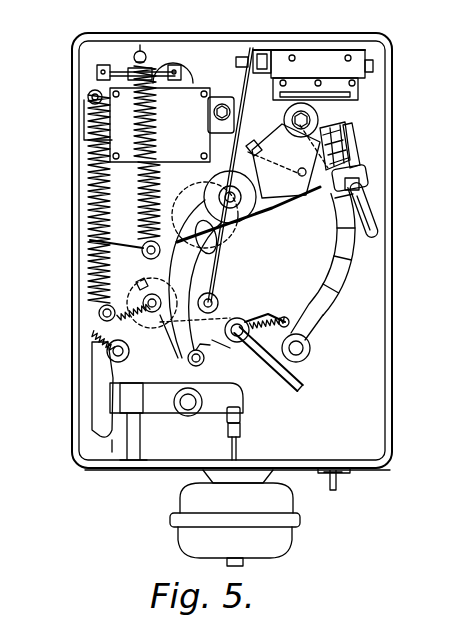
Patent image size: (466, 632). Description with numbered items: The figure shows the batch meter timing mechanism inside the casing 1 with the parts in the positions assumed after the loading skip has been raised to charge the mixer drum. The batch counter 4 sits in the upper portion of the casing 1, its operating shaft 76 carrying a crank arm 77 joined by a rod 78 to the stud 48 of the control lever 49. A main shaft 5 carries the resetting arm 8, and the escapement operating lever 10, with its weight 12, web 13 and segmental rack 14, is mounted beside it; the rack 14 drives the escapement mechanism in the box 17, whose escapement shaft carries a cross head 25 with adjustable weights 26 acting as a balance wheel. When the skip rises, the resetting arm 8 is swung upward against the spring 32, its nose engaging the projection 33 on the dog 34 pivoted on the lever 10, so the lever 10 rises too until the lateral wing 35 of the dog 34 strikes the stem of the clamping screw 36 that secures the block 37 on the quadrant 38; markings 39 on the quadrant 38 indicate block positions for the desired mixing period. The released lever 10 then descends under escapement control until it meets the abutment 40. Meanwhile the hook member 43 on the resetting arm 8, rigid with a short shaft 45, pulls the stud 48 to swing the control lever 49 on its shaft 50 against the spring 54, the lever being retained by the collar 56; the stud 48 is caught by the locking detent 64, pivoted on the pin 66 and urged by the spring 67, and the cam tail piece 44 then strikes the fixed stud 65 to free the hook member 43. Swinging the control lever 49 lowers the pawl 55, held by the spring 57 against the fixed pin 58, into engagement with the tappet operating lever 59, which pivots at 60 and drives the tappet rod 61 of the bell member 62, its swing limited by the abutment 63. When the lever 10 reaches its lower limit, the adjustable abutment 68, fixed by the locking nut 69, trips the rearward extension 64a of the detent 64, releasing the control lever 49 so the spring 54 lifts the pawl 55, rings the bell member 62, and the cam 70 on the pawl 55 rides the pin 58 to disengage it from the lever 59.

The casing 1 is at (396, 303).
The batch counter 4 is at (330, 62).
The main shaft 5 is at (162, 214).
The resetting arm 8 is at (253, 176).
The escapement operating lever 10 is at (253, 227).
The weight 12 is at (290, 205).
The web 13 is at (92, 255).
The segmental rack 14 is at (88, 212).
The box 17 is at (192, 98).
The cross head 25 is at (135, 52).
The adjustable weights 26 is at (97, 68).
The spring 32 is at (157, 108).
The projection 33 is at (312, 130).
The dog 34 is at (284, 161).
The lateral wing 35 is at (330, 165).
The clamping screw 36 is at (335, 140).
The block 37 is at (344, 143).
The quadrant 38 is at (332, 323).
The markings 39 is at (350, 270).
The abutment 40 is at (258, 322).
The hook member 43 is at (200, 278).
The cam tail piece 44 is at (212, 342).
The short shaft 45 is at (265, 215).
The stud 48 is at (217, 294).
The control lever 49 is at (150, 338).
The shaft 50 is at (148, 298).
The spring 54 is at (90, 172).
The pawl 55 is at (108, 410).
The collar 56 is at (190, 362).
The spring 57 is at (93, 329).
The fixed pin 58 is at (106, 352).
The tappet operating lever 59 is at (190, 410).
The pivot 60 is at (202, 413).
The tappet rod 61 is at (242, 443).
The bell member 62 is at (178, 506).
The abutment 63 is at (112, 452).
The locking detent 64 is at (238, 318).
The rearward extension 64a is at (286, 385).
The fixed stud 65 is at (206, 357).
The pin 66 is at (226, 330).
The spring 67 is at (273, 326).
The adjustable abutment 68 is at (378, 218).
The locking nut 69 is at (366, 186).
The cam 70 is at (92, 380).
The operating shaft 76 is at (240, 57).
The crank arm 77 is at (262, 50).
The rod 78 is at (238, 50).